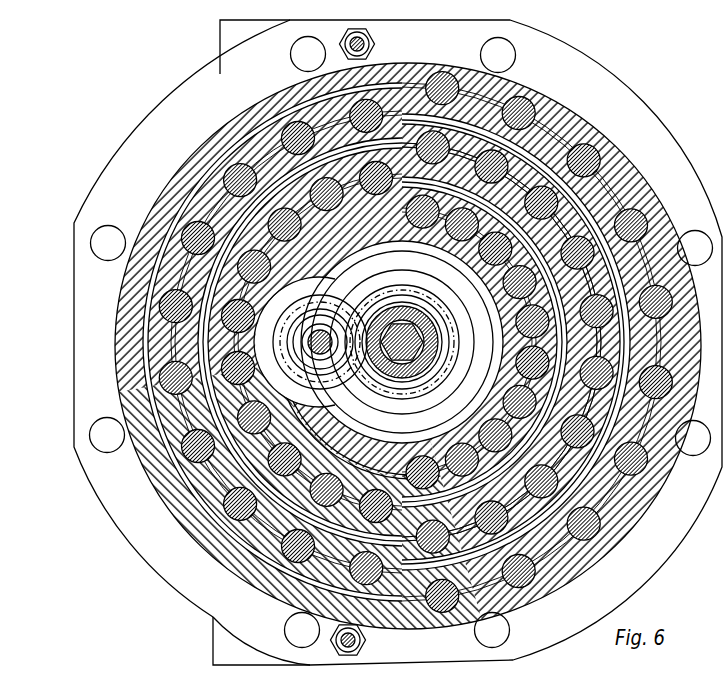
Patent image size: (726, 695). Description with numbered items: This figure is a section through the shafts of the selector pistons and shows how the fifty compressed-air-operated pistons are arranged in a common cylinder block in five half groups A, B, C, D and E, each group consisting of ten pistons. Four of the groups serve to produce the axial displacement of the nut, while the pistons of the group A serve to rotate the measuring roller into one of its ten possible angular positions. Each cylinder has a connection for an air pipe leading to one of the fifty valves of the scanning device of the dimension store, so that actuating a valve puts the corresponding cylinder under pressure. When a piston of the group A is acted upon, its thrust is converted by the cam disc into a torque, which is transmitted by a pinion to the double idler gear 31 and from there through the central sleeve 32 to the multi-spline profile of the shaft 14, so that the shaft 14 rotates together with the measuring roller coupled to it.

The shaft 14 is at (425, 352).
The double idler gear 31 is at (328, 312).
The central sleeve 32 is at (438, 340).
The piston group A is at (528, 183).
The piston group B is at (313, 187).
The piston group C is at (556, 200).
The piston group D is at (240, 173).
The piston group E is at (640, 215).